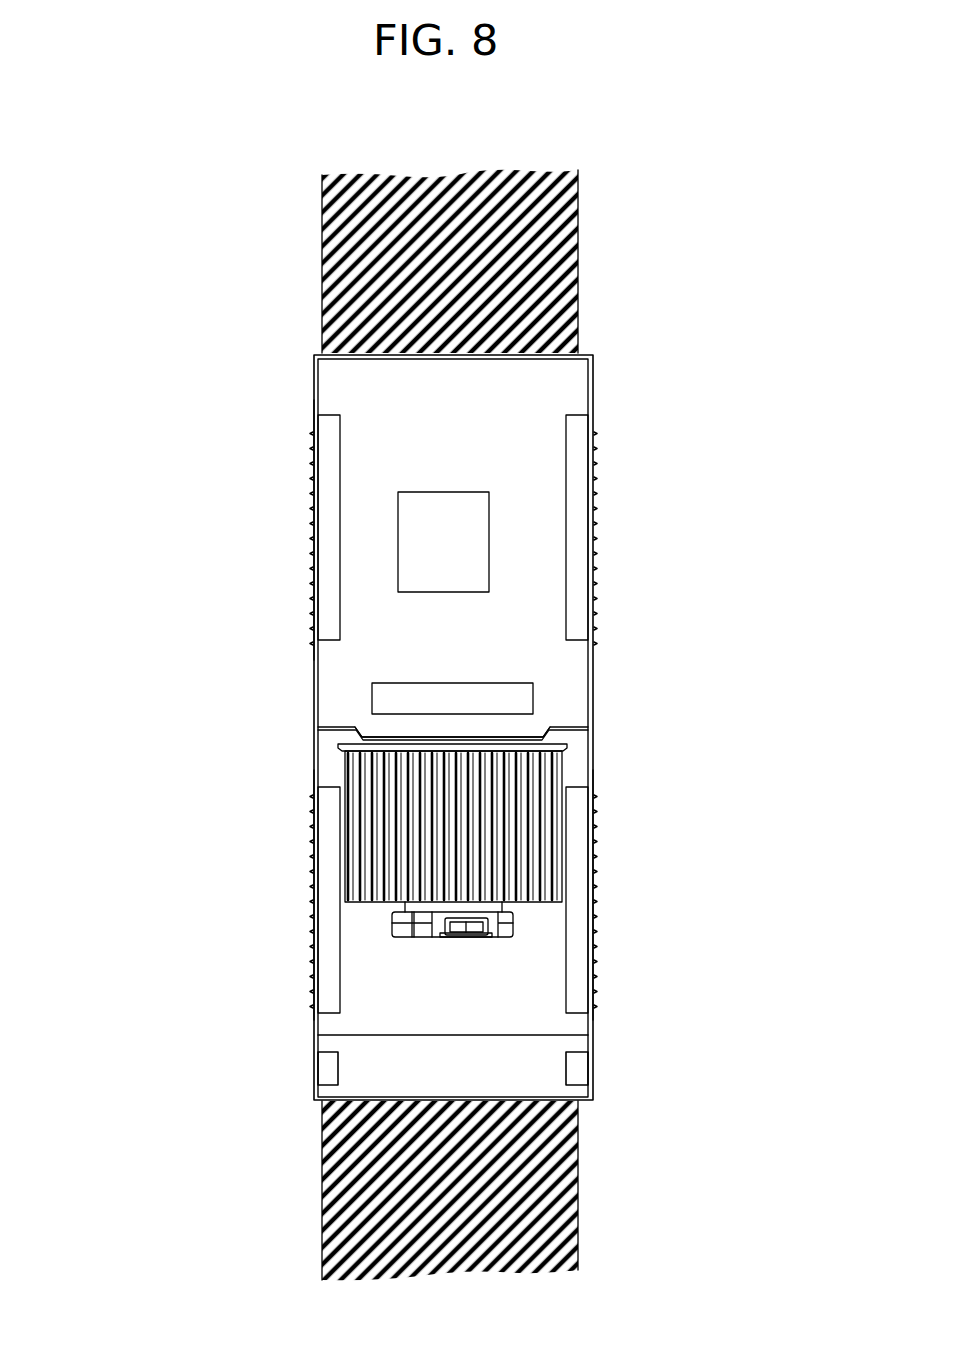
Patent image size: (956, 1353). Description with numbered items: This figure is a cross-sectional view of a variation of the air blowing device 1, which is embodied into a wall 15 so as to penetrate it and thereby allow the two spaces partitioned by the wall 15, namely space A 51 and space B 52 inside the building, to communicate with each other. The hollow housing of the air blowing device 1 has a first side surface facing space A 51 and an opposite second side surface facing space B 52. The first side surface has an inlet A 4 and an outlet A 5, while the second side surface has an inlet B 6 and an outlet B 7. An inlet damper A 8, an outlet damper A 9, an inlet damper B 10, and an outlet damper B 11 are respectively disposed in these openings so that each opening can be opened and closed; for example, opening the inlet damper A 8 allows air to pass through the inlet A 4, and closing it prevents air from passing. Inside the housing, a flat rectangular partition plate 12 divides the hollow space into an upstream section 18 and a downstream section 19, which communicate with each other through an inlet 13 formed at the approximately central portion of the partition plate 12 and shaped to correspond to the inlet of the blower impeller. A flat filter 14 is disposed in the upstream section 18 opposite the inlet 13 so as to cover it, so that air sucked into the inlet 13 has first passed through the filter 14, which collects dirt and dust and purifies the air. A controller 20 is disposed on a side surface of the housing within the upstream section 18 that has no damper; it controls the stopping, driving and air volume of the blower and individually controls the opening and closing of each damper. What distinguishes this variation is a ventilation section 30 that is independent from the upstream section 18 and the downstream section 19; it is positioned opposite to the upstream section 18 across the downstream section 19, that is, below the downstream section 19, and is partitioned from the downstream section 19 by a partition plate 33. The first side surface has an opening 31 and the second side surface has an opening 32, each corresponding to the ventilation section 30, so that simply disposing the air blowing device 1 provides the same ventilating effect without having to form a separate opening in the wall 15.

The air blowing device 1 is at (137, 298).
The inlet A 4 is at (595, 437).
The outlet A 5 is at (593, 805).
The inlet B 6 is at (313, 428).
The outlet B 7 is at (312, 813).
The inlet damper A 8 is at (578, 488).
The outlet damper A 9 is at (580, 840).
The inlet damper B 10 is at (327, 468).
The outlet damper B 11 is at (325, 860).
The partition plate 12 is at (550, 728).
The inlet 13 is at (397, 729).
The filter 14 is at (505, 683).
The wall 15 is at (352, 252).
The upstream section 18 is at (333, 658).
The downstream section 19 is at (362, 992).
The controller 20 is at (454, 512).
The ventilation section 30 is at (435, 1068).
The opening 31 is at (593, 1068).
The opening 32 is at (314, 1068).
The partition plate 33 is at (570, 1034).
The space A 51 is at (813, 611).
The space B 52 is at (138, 611).